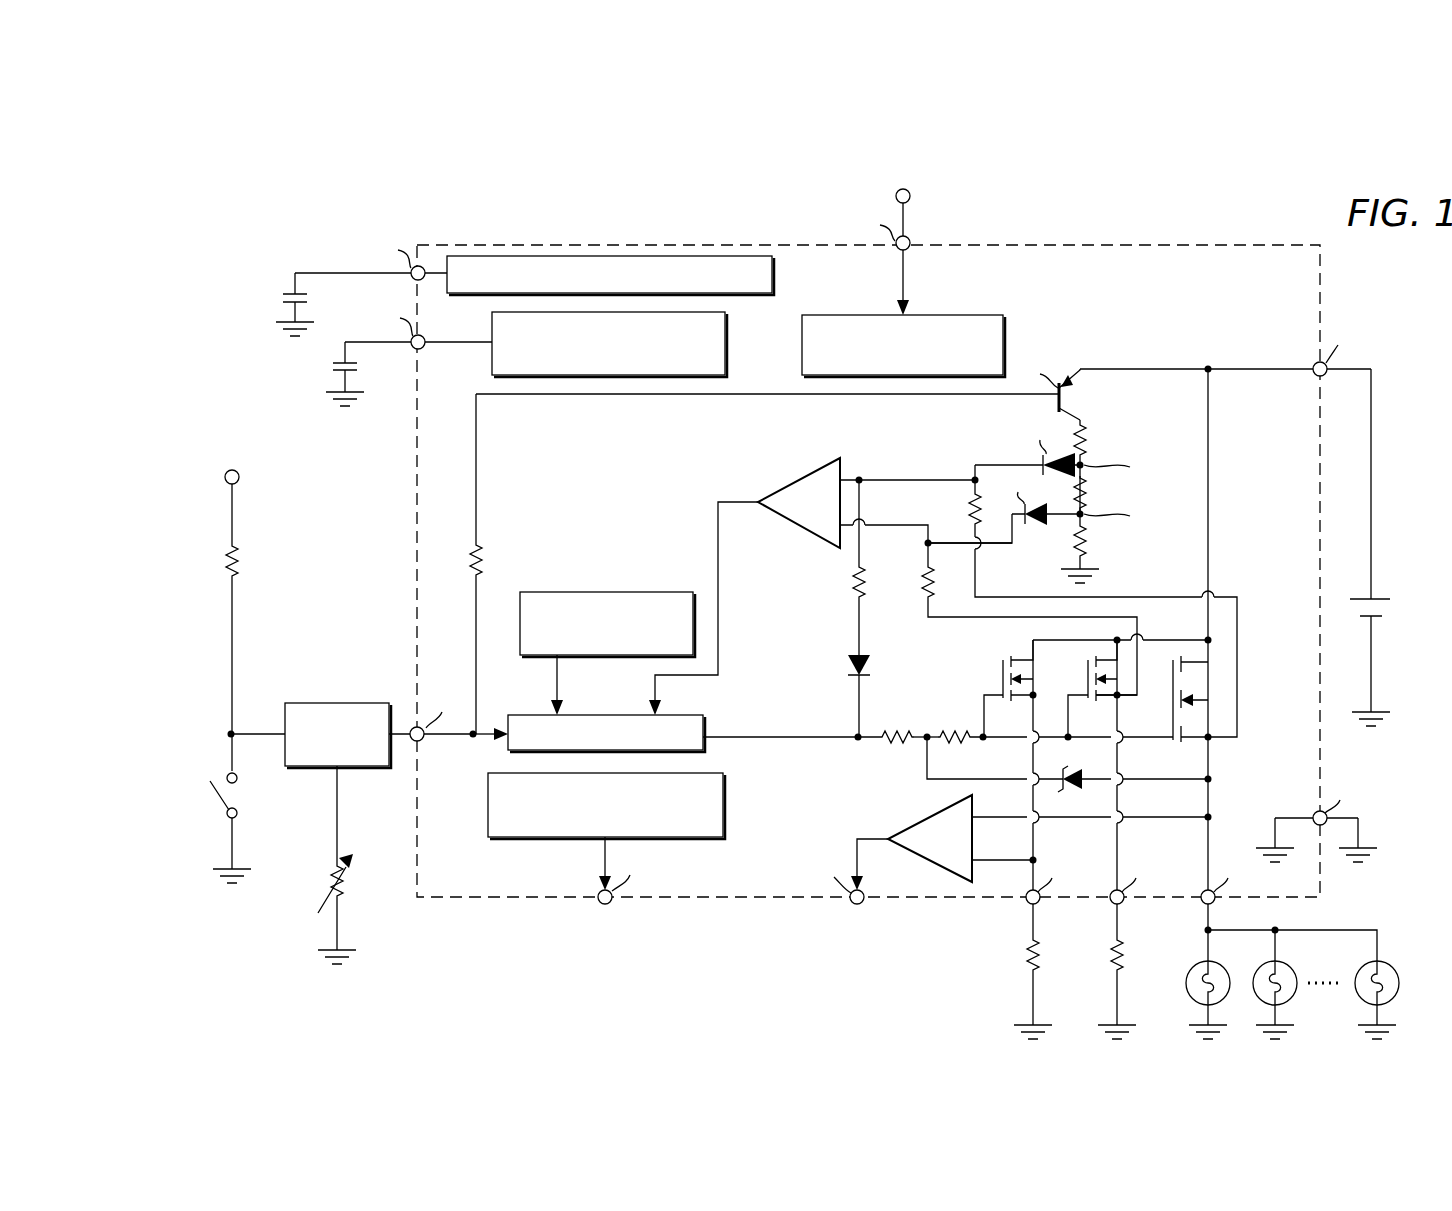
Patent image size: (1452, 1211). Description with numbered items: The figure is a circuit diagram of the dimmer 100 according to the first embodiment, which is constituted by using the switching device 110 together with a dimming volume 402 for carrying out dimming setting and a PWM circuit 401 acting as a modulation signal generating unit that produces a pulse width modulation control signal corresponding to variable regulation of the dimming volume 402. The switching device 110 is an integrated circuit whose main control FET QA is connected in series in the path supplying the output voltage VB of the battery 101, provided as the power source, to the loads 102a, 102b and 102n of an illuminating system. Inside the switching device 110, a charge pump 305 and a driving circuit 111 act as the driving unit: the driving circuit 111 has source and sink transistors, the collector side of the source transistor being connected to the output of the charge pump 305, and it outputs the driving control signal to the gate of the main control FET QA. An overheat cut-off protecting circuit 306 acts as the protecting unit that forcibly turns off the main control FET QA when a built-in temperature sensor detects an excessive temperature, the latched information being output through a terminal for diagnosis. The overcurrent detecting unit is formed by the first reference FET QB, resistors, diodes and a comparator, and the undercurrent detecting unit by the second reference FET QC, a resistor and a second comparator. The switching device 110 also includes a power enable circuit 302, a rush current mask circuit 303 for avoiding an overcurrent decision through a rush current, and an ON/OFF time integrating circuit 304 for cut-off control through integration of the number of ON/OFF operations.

The dimmer 100 is at (575, 240).
The switching device 110 is at (1165, 245).
The battery 101 is at (1374, 599).
The load 102a is at (1185, 976).
The load 102b is at (1257, 976).
The load 102n is at (1392, 976).
The power enable circuit 302 is at (948, 315).
The rush current mask circuit 303 is at (774, 272).
The ON/OFF time integrating circuit 304 is at (727, 342).
The charge pump 305 is at (602, 592).
The overheat cut-off protecting circuit 306 is at (725, 803).
The driving circuit 111 is at (540, 714).
The PWM circuit 401 is at (337, 703).
The dimming volume 402 is at (346, 905).